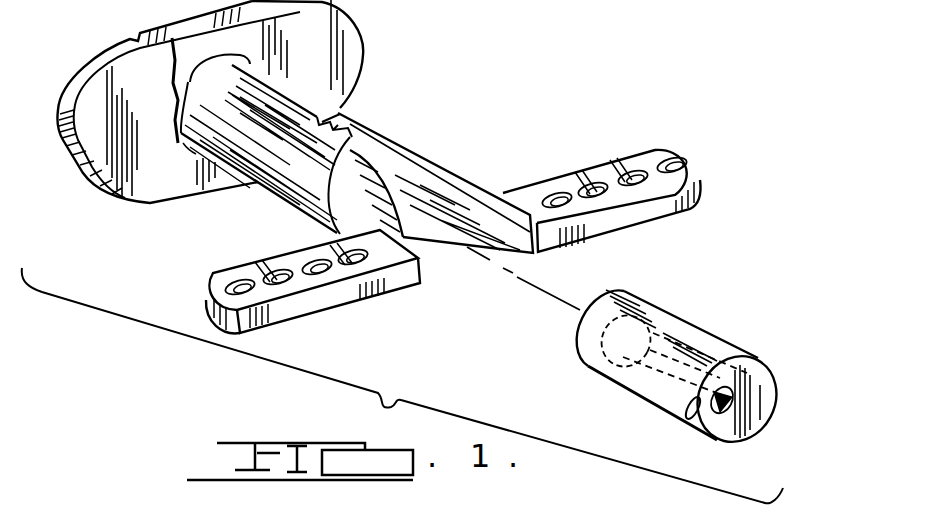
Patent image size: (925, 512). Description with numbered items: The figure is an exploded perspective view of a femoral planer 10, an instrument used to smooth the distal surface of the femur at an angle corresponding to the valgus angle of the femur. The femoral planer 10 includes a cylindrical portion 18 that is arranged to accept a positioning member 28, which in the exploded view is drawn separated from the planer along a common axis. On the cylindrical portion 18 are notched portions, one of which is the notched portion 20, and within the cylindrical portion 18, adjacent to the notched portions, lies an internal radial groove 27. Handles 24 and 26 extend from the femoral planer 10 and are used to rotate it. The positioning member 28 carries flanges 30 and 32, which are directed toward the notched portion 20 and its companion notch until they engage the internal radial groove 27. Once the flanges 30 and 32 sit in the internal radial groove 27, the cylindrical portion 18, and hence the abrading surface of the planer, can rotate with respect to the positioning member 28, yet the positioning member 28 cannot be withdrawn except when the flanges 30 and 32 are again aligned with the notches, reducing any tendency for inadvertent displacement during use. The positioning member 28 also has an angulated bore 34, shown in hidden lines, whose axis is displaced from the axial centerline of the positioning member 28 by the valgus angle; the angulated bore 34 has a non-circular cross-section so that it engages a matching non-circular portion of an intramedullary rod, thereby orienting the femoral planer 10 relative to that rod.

The femoral planer 10 is at (568, 104).
The cylindrical portion 18 is at (290, 90).
The notched portion 20 is at (340, 113).
The handle 24 is at (707, 187).
The handle 26 is at (400, 280).
The internal radial groove 27 is at (372, 168).
The positioning member 28 is at (690, 323).
The flange 30 is at (773, 377).
The flange 32 is at (693, 420).
The angulated bore 34 is at (632, 389).